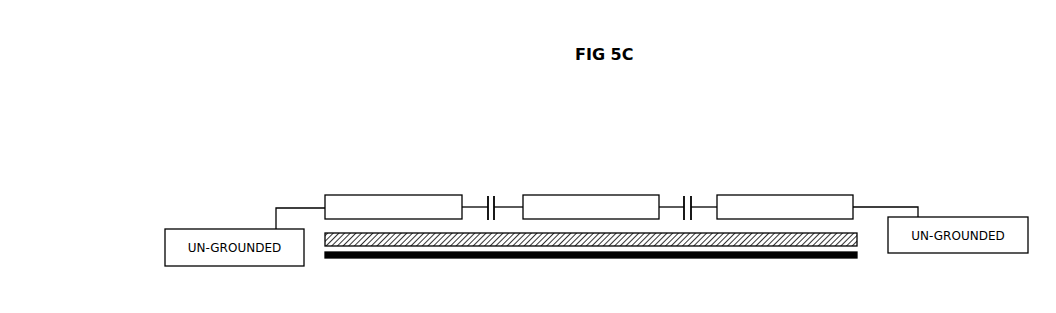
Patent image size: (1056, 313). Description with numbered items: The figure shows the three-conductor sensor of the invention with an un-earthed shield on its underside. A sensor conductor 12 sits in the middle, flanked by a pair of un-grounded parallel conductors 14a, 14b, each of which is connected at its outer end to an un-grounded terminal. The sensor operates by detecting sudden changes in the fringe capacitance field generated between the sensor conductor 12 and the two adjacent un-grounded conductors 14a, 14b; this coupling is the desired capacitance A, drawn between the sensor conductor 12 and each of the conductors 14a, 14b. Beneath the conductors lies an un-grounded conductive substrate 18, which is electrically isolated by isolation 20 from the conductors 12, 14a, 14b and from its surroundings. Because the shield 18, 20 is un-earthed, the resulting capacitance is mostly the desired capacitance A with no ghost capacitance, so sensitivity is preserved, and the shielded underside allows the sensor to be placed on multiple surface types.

The sensor conductor 12 is at (585, 187).
The un-grounded parallel conductor 14a is at (388, 189).
The un-grounded parallel conductor 14b is at (792, 186).
The capacitance A is at (491, 188).
The un-grounded conductive substrate 18 is at (586, 261).
The electrical isolation 20 is at (866, 242).